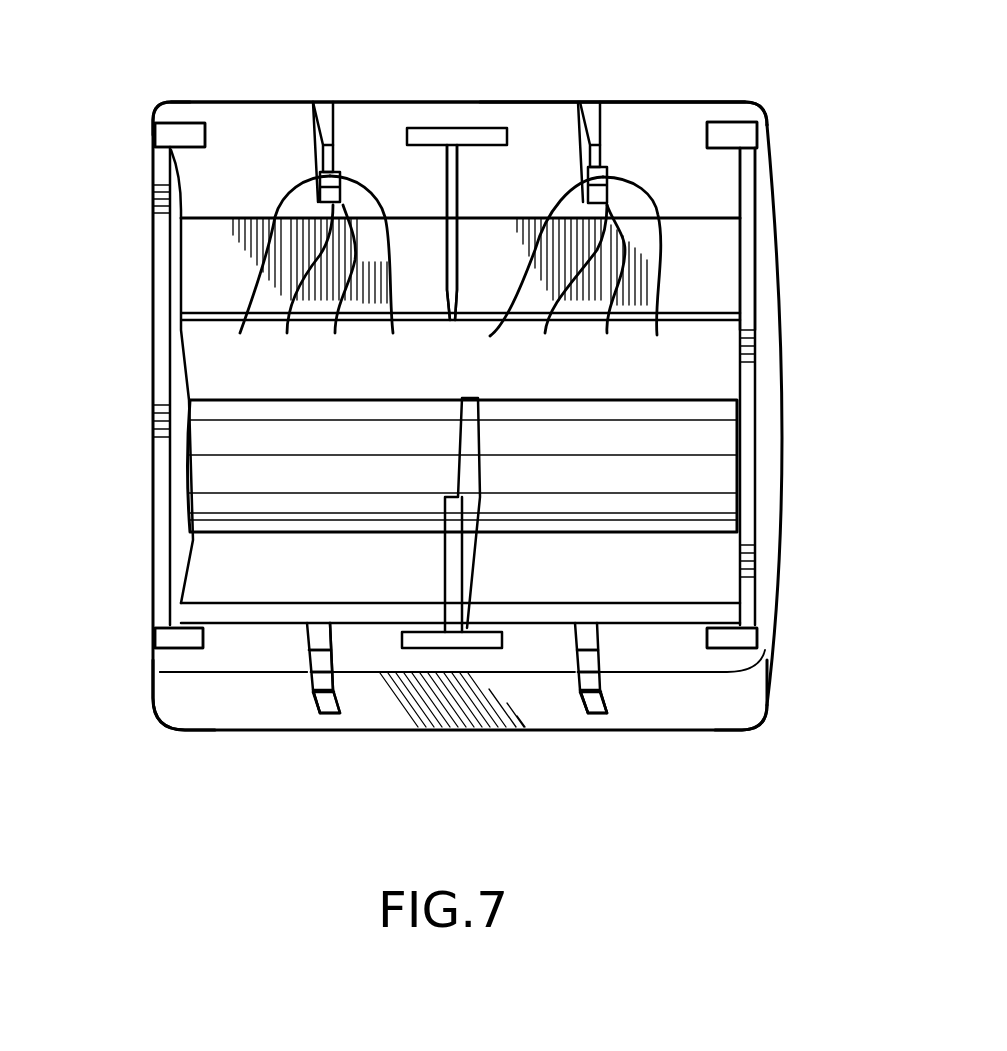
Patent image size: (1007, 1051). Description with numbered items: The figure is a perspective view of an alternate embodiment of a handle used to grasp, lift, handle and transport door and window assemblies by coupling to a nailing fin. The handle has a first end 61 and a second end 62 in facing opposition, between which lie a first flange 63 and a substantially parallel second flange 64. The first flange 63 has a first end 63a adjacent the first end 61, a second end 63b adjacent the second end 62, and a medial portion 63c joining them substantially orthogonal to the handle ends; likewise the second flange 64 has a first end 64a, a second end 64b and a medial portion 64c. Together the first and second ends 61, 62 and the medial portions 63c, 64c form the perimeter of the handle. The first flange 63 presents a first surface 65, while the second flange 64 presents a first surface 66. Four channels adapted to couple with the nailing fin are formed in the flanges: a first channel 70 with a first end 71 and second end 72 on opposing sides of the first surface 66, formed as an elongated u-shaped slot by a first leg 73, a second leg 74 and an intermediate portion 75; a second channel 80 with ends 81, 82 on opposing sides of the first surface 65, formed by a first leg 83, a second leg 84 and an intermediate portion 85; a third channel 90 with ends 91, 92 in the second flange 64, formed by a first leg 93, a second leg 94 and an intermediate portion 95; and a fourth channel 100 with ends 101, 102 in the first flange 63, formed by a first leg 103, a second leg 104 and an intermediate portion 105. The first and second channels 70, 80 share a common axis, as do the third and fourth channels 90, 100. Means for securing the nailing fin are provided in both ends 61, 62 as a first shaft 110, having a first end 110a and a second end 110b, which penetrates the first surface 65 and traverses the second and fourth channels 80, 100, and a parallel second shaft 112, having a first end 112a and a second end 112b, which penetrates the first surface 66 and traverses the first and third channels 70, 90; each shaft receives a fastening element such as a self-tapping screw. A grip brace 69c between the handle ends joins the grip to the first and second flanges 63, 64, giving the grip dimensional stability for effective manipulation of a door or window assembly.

The first end 61 is at (152, 382).
The second end 62 is at (777, 450).
The first flange 63 is at (250, 105).
The first end 63a is at (158, 105).
The second end 63b is at (718, 170).
The medial portion 63c is at (513, 100).
The second flange 64 is at (462, 708).
The first end 64a is at (175, 660).
The second end 64b is at (753, 687).
The medial portion 64c is at (536, 712).
The first surface 65 is at (390, 105).
The first surface 66 is at (223, 663).
The grip brace 69c is at (452, 290).
The first channel 70 is at (322, 625).
The first end 71 is at (308, 697).
The second end 72 is at (316, 650).
The first leg 73 is at (312, 716).
The second leg 74 is at (327, 716).
The intermediate portion 75 is at (327, 640).
The second channel 80 is at (337, 105).
The first end 81 is at (318, 100).
The second end 82 is at (342, 293).
The first leg 83 is at (275, 273).
The second leg 84 is at (374, 275).
The intermediate portion 85 is at (303, 287).
The third channel 90 is at (588, 625).
The first end 91 is at (597, 703).
The second end 92 is at (588, 625).
The first leg 93 is at (580, 712).
The second leg 94 is at (605, 716).
The intermediate portion 95 is at (592, 715).
The fourth channel 100 is at (597, 103).
The first end 101 is at (583, 103).
The second end 102 is at (606, 294).
The first leg 103 is at (531, 277).
The second leg 104 is at (650, 276).
The intermediate portion 105 is at (565, 288).
The first shaft 110 is at (153, 147).
The first end 110a is at (168, 133).
The second end 110b is at (745, 140).
The second shaft 112 is at (167, 642).
The first end 112a is at (153, 632).
The second end 112b is at (762, 645).